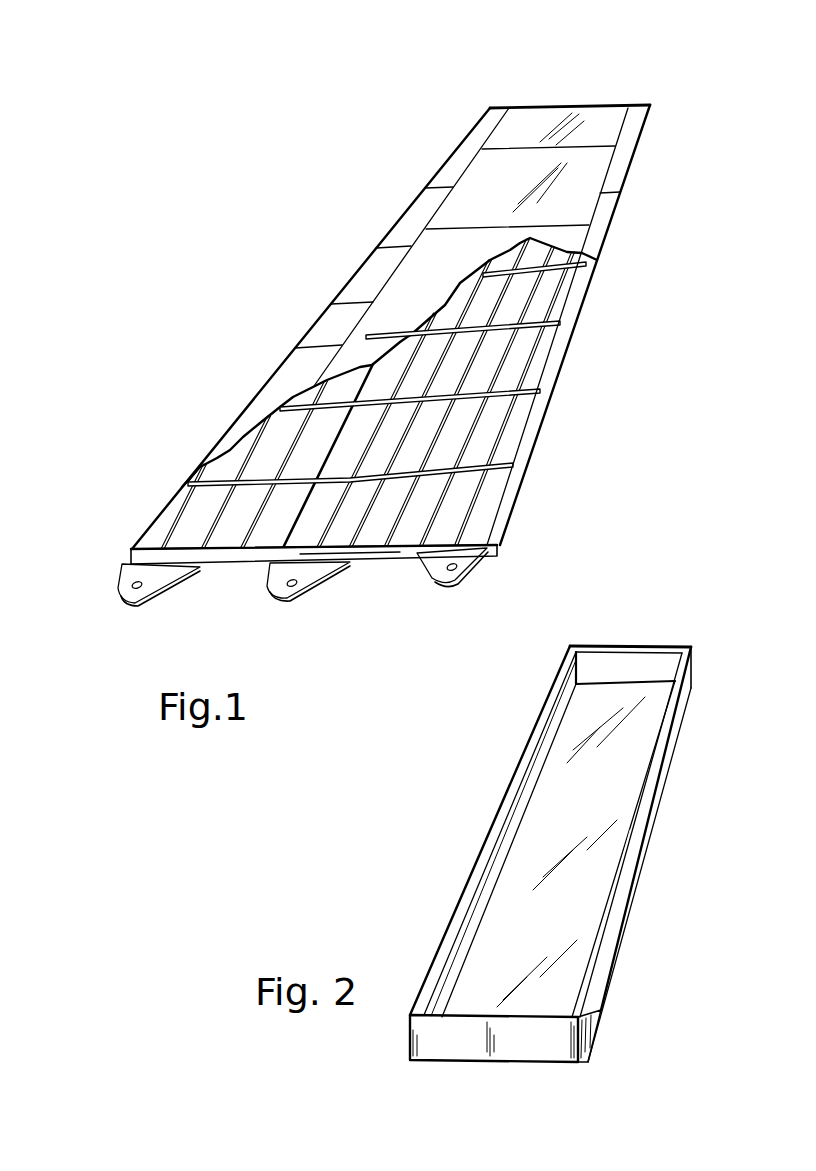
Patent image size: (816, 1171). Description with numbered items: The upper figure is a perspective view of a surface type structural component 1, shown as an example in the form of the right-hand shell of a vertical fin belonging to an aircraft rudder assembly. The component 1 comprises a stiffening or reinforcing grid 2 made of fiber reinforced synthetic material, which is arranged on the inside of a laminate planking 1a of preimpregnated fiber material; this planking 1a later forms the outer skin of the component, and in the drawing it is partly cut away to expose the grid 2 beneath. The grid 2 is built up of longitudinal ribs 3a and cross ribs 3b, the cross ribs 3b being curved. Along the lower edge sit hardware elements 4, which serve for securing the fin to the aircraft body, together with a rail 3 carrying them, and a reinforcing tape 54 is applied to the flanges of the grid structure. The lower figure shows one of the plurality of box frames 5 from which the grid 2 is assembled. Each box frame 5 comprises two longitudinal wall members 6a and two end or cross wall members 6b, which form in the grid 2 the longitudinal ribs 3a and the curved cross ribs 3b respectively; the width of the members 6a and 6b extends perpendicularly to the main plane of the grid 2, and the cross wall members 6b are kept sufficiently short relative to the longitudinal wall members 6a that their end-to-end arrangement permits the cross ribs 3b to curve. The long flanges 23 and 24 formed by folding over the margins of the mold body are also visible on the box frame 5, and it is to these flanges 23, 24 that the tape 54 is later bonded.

In FIG. 1, the structural component 1 is at (547, 102).
In FIG. 1, the laminate planking 1a is at (408, 299).
In FIG. 1, the reinforcing grid 2 is at (410, 372).
In FIG. 1, the transverse rail 3 is at (253, 557).
In FIG. 1, the longitudinal ribs 3a is at (525, 297).
In FIG. 1, the cross ribs 3b is at (572, 262).
In FIG. 1, the hardware elements 4 is at (120, 592).
In FIG. 1, the tape 54 is at (422, 530).
In FIG. 2, the box frame 5 is at (607, 803).
In FIG. 2, the longitudinal wall members 6a is at (482, 883).
In FIG. 2, the cross wall members 6b is at (637, 660).
In FIG. 2, the long flange 23 is at (610, 926).
In FIG. 2, the long flange 24 is at (460, 912).